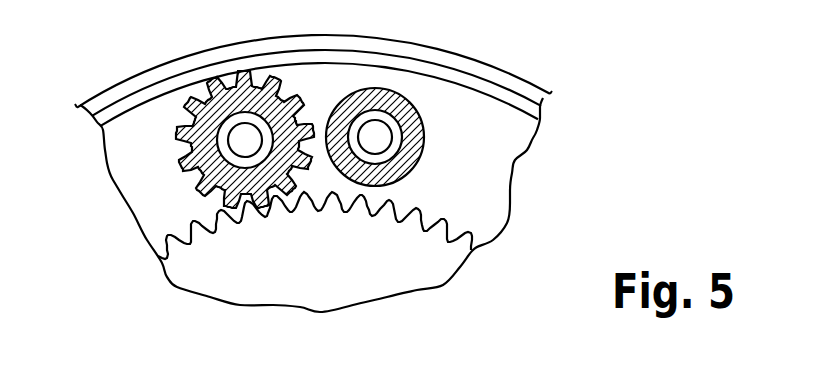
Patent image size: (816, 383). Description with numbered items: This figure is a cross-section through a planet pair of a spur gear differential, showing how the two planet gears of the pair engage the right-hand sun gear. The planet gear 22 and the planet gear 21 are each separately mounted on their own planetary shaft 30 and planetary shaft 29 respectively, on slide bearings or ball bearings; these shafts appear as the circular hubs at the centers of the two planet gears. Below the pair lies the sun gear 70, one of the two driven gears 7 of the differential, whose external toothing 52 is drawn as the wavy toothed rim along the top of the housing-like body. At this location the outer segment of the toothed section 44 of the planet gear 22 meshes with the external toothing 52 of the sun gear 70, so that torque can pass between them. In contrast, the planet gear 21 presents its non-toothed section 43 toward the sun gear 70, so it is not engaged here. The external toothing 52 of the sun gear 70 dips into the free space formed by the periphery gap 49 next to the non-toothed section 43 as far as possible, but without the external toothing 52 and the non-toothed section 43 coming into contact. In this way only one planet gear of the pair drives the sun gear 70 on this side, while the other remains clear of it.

The driven gear 7 is at (313, 187).
The sun gear 70 is at (388, 272).
The planet gear 21 is at (463, 94).
The non-toothed section 43 is at (411, 137).
The planet gear 22 is at (175, 105).
The section 44 is at (175, 139).
The planetary shaft 29 is at (382, 140).
The planetary shaft 30 is at (245, 140).
The periphery gap 49 is at (387, 192).
The external toothing 52 is at (323, 221).